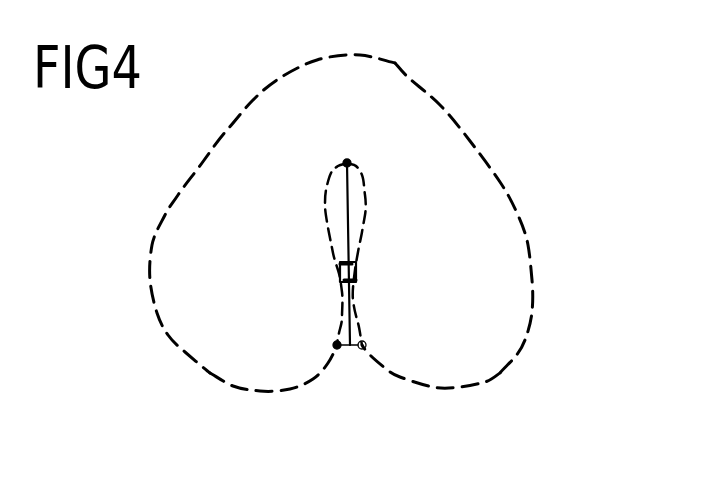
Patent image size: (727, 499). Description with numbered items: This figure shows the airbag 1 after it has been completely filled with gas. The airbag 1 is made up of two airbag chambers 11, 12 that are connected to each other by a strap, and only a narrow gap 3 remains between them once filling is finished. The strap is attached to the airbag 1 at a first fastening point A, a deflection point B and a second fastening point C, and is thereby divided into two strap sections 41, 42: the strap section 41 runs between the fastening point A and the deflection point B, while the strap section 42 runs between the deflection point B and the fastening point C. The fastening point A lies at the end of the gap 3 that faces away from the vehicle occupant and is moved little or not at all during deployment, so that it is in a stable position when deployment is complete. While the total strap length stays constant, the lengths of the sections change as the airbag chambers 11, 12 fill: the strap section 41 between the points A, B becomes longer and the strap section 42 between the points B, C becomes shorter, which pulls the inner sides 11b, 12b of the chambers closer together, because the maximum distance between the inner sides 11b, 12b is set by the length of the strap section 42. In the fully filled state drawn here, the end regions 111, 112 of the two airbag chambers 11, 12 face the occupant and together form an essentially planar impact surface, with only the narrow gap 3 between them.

The airbag 1 is at (333, 243).
The gap 3 is at (357, 200).
The airbag chamber 11 is at (252, 261).
The airbag chamber 12 is at (459, 272).
The end region 111 is at (250, 390).
The end region 112 is at (467, 387).
The strap section 41 is at (334, 259).
The strap section 42 is at (349, 348).
The inner side 11b is at (354, 278).
The inner side 12b is at (340, 264).
The first fastening point A is at (347, 163).
The deflection point B is at (366, 343).
The second fastening point C is at (337, 345).